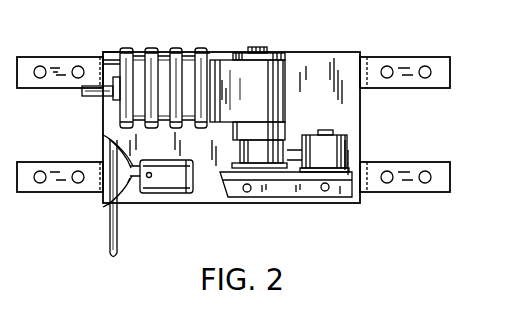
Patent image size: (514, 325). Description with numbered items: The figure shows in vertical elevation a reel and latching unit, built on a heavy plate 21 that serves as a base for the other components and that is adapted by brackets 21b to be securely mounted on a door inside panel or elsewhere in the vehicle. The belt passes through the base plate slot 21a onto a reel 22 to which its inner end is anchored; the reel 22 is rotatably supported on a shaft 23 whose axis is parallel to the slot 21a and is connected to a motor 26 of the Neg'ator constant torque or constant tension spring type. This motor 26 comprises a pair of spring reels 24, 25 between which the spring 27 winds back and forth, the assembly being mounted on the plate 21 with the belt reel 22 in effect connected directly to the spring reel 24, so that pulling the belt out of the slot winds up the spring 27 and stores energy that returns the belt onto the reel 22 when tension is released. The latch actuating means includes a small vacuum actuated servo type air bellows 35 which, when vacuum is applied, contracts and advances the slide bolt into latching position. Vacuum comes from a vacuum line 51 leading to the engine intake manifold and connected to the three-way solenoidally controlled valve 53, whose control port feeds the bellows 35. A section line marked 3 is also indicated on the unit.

The heavy plate 21 is at (343, 62).
The base plate slot 21a is at (216, 58).
The brackets 21b is at (403, 193).
The reel 22 is at (285, 53).
The shaft 23 is at (262, 47).
The spring reel 24 is at (265, 168).
The spring reel 25 is at (350, 177).
The motor 26 is at (297, 134).
The spring 27 is at (303, 152).
The air bellows 35 is at (141, 53).
The vacuum line 51 is at (110, 231).
The three-way solenoidally controlled valve 53 is at (178, 194).
The section line 3- 3 is at (235, 86).